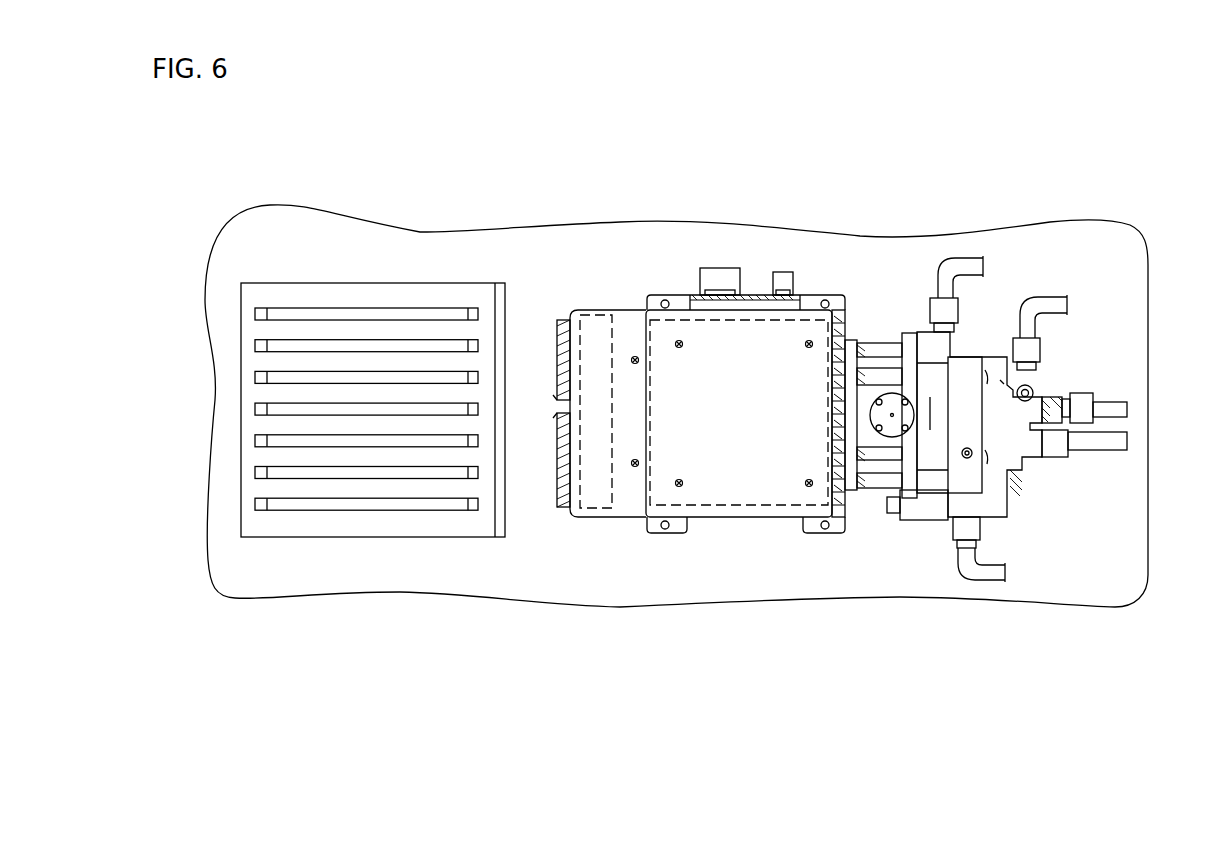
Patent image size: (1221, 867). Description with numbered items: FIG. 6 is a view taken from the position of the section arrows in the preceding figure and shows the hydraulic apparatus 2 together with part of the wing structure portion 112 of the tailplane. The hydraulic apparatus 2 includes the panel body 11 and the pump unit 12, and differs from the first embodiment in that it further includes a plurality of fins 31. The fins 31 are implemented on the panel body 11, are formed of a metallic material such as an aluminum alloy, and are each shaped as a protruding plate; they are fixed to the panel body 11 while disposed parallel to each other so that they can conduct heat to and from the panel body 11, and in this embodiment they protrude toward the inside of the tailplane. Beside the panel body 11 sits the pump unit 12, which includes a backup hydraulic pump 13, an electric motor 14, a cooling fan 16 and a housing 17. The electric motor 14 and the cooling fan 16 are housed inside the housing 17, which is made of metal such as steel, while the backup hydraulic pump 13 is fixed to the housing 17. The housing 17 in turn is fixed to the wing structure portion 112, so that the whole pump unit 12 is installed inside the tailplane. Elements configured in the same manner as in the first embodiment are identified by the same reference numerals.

The hydraulic apparatus 2 is at (723, 409).
The fins 31 is at (290, 378).
The panel body 11 is at (390, 409).
The pump unit 12 is at (1025, 355).
The backup hydraulic pump 13 is at (1007, 426).
The electric motor 14 is at (755, 320).
The cooling fan 16 is at (602, 310).
The housing 17 is at (737, 508).
The wing structure portion 112 is at (1107, 580).